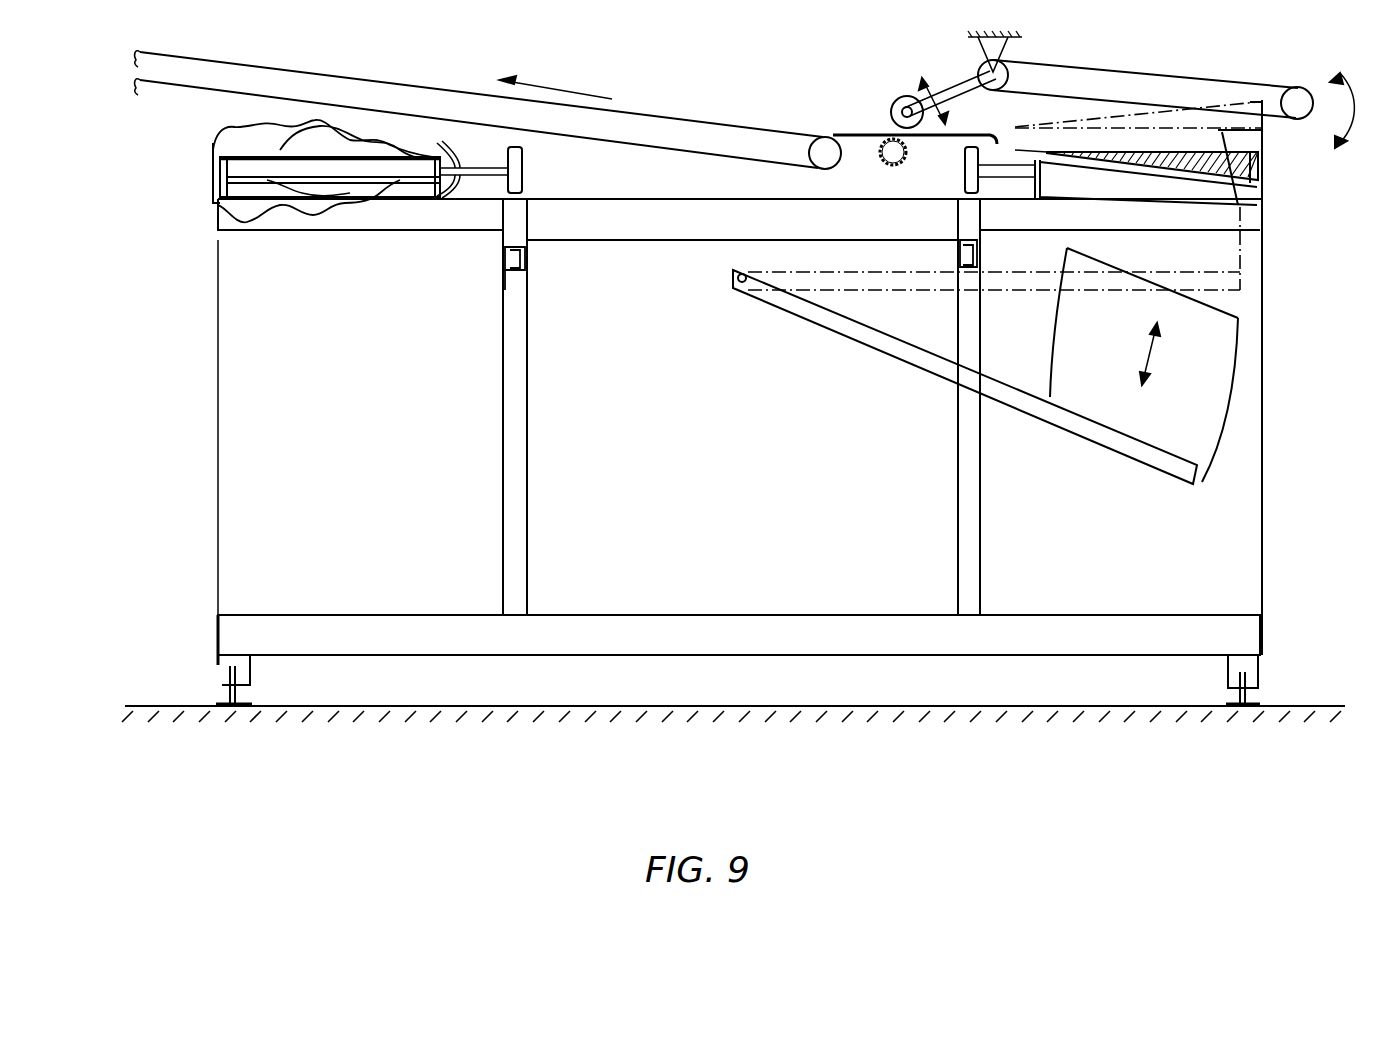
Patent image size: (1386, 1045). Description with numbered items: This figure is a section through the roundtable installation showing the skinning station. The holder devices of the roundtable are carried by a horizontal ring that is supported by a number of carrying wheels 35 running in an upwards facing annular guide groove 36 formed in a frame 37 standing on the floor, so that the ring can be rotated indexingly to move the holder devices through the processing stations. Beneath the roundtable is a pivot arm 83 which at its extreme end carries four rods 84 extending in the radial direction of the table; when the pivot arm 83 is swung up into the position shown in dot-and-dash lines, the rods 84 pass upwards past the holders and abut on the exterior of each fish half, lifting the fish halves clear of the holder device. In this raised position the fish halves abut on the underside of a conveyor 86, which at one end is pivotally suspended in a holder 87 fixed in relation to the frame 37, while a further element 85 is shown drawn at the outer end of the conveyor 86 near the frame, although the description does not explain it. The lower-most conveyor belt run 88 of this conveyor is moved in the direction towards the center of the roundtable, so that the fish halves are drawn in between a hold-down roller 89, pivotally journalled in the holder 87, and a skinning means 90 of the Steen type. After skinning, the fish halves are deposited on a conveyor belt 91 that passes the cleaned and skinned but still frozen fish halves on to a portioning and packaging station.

The carrying wheels 35 is at (526, 259).
The annular guide groove 36 is at (505, 278).
The frame 37 is at (516, 441).
The pivot arm 83 is at (860, 327).
The rods 84 is at (1223, 343).
The adjustable guide 85 is at (1265, 122).
The conveyor 86 is at (1183, 80).
The holder 87 is at (1022, 37).
The lower-most conveyor belt run 88 is at (1090, 98).
The hold-down roller 89 is at (895, 101).
The skinning means 90 is at (902, 164).
The conveyor belt 91 is at (385, 92).